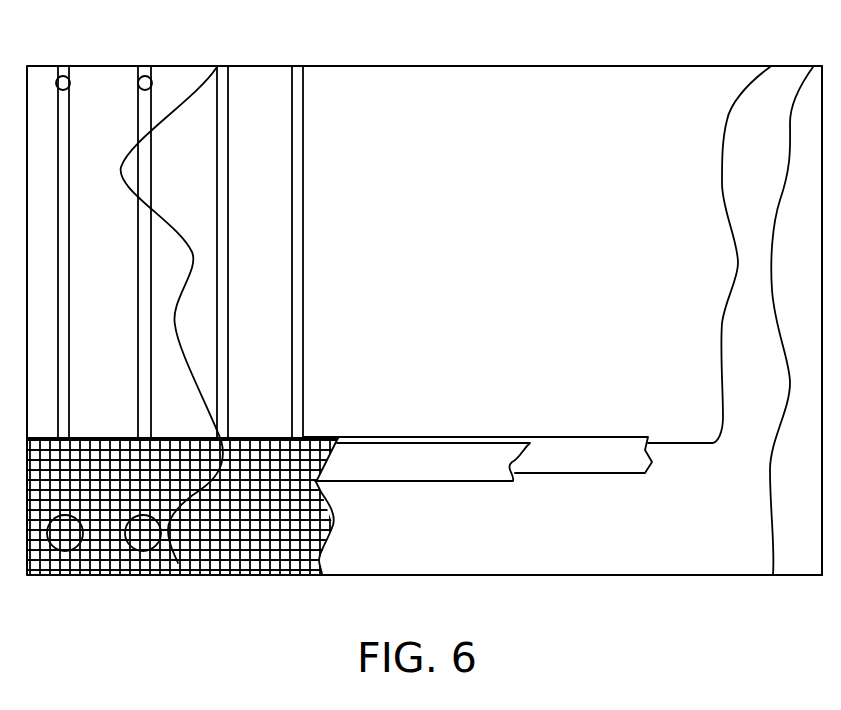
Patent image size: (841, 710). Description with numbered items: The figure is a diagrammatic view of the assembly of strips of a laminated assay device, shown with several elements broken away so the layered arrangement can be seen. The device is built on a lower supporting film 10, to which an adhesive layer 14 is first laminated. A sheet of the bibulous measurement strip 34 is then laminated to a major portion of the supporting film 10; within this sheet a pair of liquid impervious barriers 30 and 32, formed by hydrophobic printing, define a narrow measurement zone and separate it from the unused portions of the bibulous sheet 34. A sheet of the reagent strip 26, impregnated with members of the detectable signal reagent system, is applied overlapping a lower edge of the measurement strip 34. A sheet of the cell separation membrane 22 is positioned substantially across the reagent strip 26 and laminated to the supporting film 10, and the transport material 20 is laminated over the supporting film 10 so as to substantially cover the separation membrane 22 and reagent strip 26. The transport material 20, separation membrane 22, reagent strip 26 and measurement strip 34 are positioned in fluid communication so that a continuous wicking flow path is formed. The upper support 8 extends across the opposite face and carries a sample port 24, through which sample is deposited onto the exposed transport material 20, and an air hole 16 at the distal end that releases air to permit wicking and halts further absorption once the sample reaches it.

The first support 8 is at (170, 76).
The second support 10 is at (802, 380).
The adhesive layer 14 is at (768, 273).
The air hole 16 is at (63, 76).
The transport material 20 is at (222, 563).
The cell separation membrane 22 is at (400, 470).
The sample port 24 is at (65, 551).
The reagent strip 26 is at (575, 465).
The liquid impervious barrier 30 is at (305, 112).
The liquid impervious barrier 32 is at (290, 120).
The bibulous sheet 34 is at (665, 80).